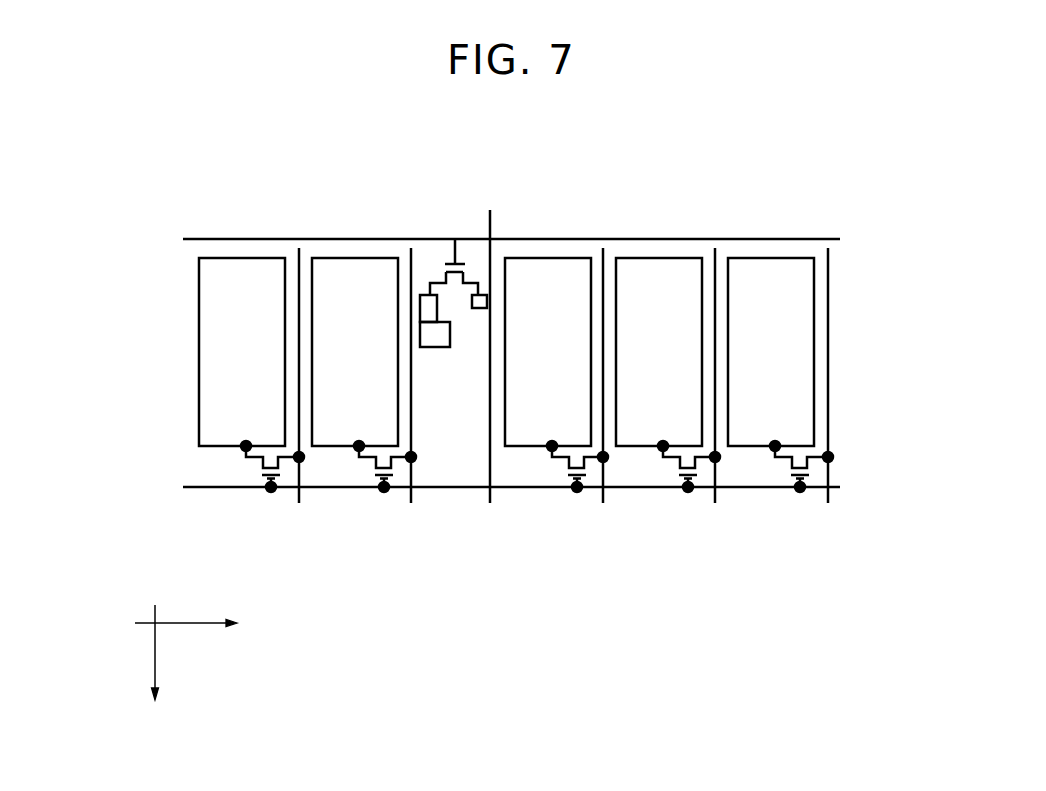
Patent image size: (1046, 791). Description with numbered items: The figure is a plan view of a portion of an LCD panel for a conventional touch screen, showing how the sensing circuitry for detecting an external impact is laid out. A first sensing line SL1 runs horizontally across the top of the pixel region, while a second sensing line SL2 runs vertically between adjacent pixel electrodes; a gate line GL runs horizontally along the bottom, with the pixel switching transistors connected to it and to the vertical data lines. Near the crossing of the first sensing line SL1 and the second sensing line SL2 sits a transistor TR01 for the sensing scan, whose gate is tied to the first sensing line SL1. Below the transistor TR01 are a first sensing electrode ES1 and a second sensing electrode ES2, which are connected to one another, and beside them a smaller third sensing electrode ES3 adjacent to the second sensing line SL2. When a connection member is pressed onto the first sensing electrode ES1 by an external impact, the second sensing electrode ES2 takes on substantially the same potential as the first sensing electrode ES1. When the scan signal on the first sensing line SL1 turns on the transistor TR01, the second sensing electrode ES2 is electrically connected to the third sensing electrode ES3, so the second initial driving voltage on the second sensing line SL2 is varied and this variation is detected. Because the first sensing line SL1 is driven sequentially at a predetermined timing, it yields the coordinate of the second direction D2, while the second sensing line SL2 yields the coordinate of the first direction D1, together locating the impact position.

The first sensing line SL1 is at (250, 238).
The second sensing line SL2 is at (490, 503).
The gate line GL is at (215, 488).
The transistor for a sensing scan TR01 is at (453, 280).
The first sensing electrode ES1 is at (430, 337).
The second sensing electrode ES2 is at (430, 307).
The third sensing electrode ES3 is at (475, 297).
The first direction D1 is at (204, 623).
The second direction D2 is at (157, 669).